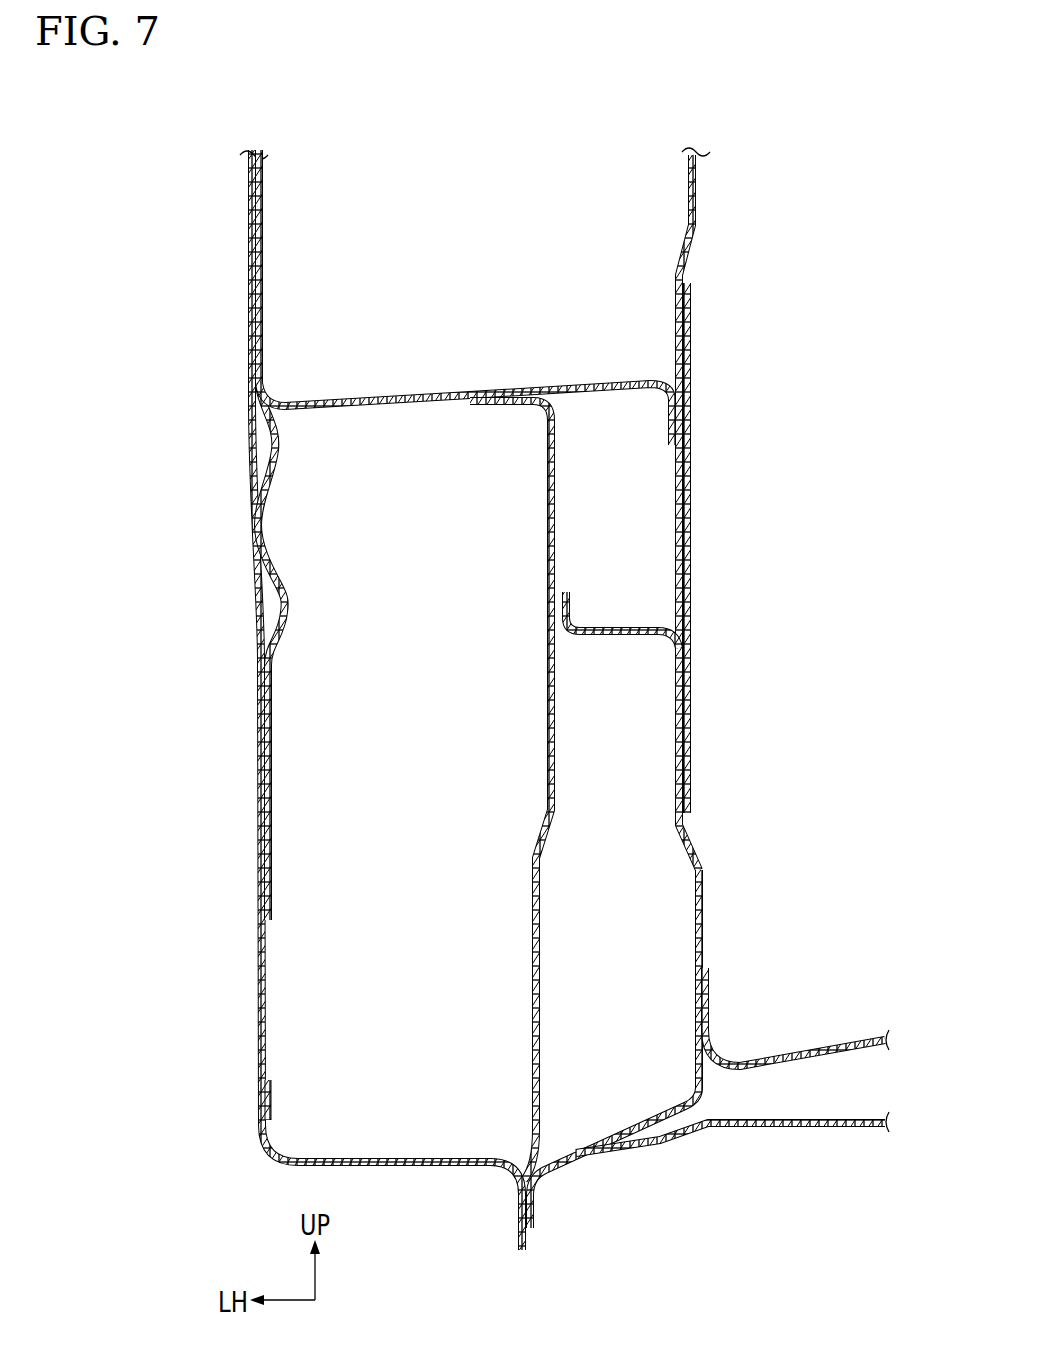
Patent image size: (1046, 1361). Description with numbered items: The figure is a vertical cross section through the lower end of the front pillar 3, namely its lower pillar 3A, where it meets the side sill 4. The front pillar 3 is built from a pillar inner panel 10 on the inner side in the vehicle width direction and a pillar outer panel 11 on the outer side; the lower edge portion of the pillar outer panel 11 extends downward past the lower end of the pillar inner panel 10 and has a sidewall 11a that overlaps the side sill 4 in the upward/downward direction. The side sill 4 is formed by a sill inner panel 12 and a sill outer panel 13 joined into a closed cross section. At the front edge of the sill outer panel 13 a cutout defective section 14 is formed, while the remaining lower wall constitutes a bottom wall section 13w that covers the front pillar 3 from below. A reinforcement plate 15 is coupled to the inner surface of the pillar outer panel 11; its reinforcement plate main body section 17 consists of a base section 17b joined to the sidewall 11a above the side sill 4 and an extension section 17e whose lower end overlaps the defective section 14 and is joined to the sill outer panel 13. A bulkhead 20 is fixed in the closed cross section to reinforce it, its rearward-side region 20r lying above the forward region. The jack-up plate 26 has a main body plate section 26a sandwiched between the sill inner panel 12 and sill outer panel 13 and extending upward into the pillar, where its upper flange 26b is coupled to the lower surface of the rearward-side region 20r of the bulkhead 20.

The front pillar 3 is at (254, 155).
The lower pillar 3A is at (240, 303).
The side sill 4 is at (718, 893).
The pillar inner panel 10 is at (692, 262).
The pillar outer panel 11 is at (255, 366).
The sidewall 11a is at (262, 600).
The sill inner panel 12 is at (702, 935).
The sill outer panel 13 is at (268, 1145).
The bottom wall section 13w is at (398, 1170).
The defective section 14 is at (258, 1073).
The reinforcement plate 15 is at (294, 638).
The reinforcement plate main body section 17 is at (193, 485).
The base section 17b is at (248, 215).
The extension section 17e is at (258, 730).
The bulkhead 20 is at (570, 374).
The rearward-side region 20r is at (458, 390).
The jack-up plate 26 is at (522, 1042).
The main body plate section 26a is at (532, 945).
The upper flange 26b is at (495, 406).